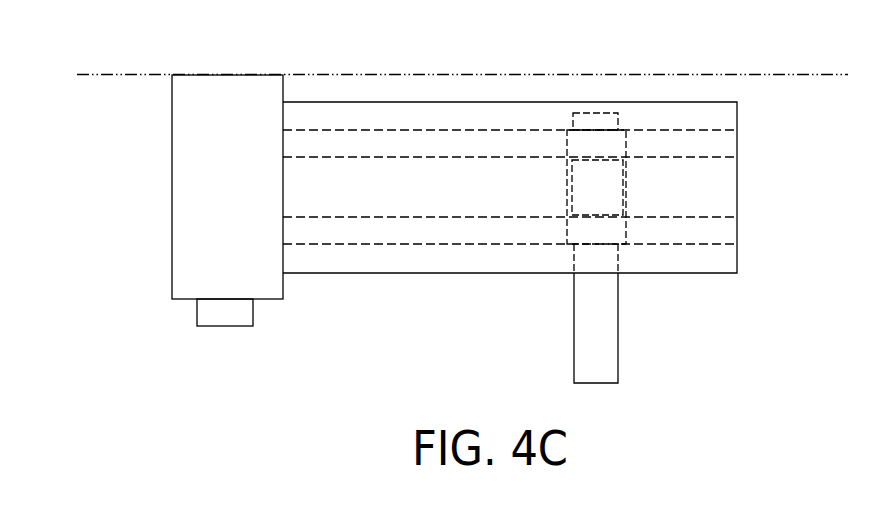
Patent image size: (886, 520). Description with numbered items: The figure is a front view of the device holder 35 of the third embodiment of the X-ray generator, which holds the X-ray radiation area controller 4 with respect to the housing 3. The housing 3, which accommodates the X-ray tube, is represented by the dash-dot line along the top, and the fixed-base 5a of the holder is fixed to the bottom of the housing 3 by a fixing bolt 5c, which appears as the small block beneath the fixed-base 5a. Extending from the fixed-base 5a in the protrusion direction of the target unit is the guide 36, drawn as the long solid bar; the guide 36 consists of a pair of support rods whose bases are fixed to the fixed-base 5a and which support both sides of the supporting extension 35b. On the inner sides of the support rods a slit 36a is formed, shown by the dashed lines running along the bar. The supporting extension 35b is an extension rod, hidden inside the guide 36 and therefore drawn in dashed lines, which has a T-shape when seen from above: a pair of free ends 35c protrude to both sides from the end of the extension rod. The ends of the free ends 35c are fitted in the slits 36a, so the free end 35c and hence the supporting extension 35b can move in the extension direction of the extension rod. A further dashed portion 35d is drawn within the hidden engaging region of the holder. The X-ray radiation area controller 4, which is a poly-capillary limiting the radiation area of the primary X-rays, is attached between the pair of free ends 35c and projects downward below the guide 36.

The housing 3 is at (840, 75).
The X-ray radiation area controller 4 is at (618, 360).
The fixed-base 5a is at (172, 232).
The fixing bolt 5c is at (228, 327).
The device holder 35 is at (758, 172).
The supporting extension 35b is at (498, 129).
The free end 35c is at (627, 140).
The engaging portion 35d is at (625, 190).
The guide 36 is at (737, 252).
The slit 36a is at (713, 215).